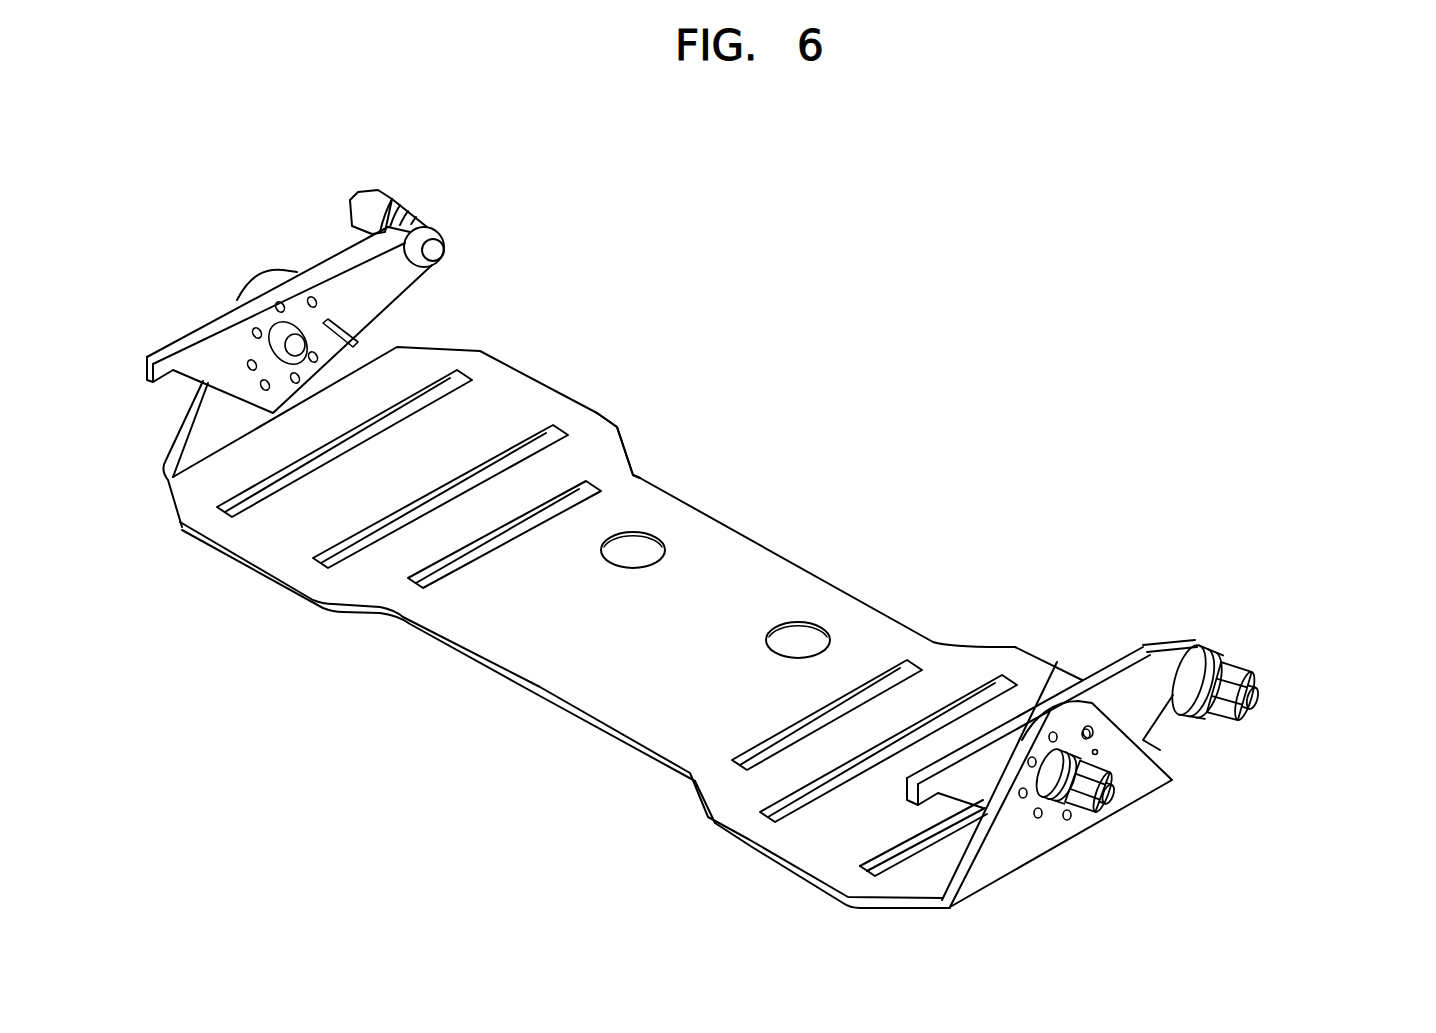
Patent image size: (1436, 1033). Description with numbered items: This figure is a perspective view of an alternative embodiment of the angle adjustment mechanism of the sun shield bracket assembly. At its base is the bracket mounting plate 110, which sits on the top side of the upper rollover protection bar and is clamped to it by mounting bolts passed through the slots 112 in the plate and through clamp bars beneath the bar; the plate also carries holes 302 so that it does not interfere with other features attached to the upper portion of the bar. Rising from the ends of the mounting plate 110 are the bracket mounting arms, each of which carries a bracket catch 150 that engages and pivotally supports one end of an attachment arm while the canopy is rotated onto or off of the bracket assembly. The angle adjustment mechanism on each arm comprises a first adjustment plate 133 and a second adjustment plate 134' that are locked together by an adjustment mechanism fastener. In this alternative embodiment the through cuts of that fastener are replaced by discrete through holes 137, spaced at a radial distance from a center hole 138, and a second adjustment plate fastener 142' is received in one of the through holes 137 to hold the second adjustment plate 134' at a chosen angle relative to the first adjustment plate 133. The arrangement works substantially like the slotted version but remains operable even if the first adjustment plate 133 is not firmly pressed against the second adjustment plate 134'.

The bracket mounting plate 110 is at (760, 540).
The slots 112 is at (580, 430).
The holes 302 is at (828, 633).
The second adjustment plate fastener 142' is at (256, 301).
The through holes 137 is at (318, 300).
The first adjustment plate 133 is at (1155, 795).
The second adjustment plate 134' is at (1182, 657).
The center hole 138 is at (1120, 807).
The bracket catch 150 is at (1258, 698).